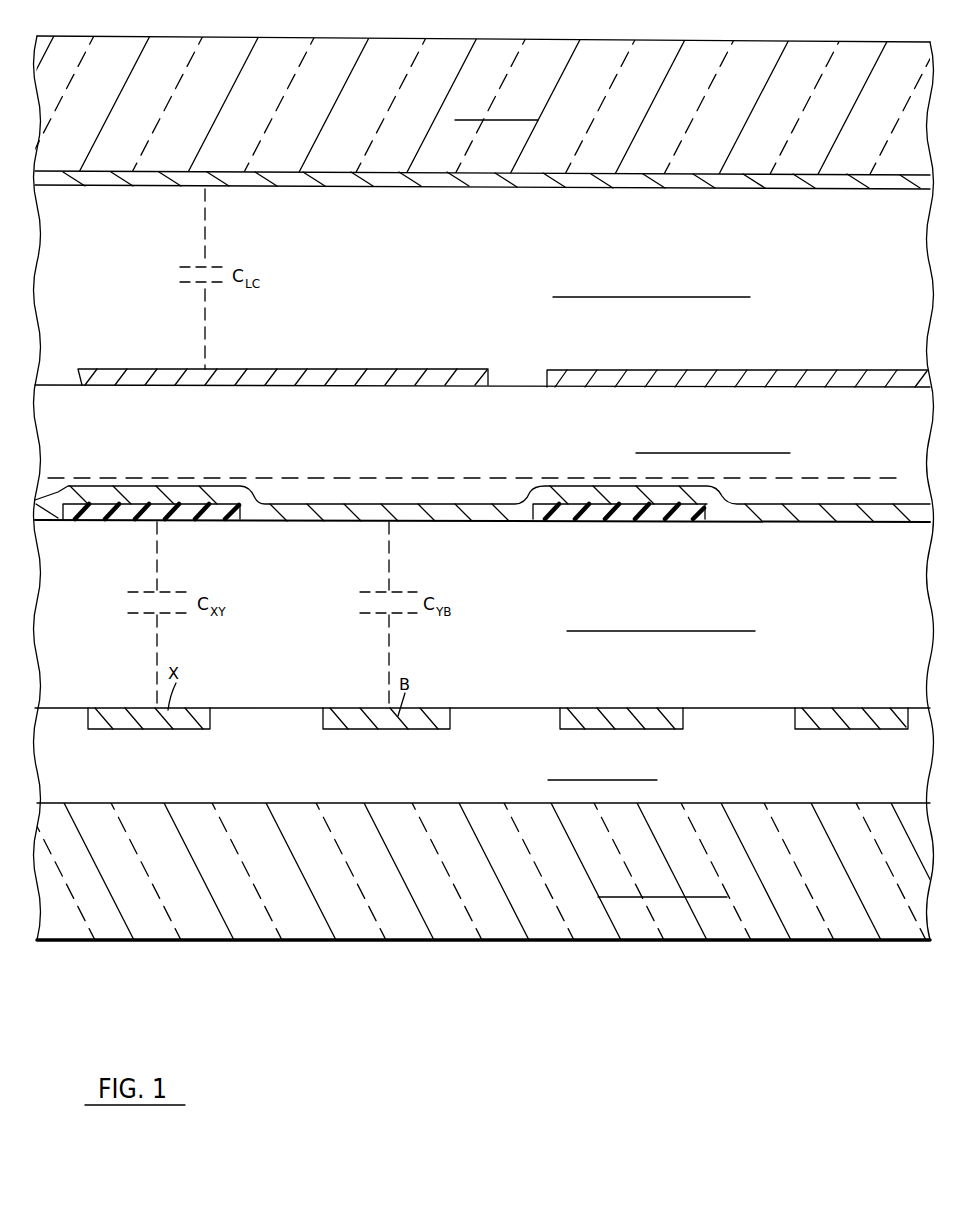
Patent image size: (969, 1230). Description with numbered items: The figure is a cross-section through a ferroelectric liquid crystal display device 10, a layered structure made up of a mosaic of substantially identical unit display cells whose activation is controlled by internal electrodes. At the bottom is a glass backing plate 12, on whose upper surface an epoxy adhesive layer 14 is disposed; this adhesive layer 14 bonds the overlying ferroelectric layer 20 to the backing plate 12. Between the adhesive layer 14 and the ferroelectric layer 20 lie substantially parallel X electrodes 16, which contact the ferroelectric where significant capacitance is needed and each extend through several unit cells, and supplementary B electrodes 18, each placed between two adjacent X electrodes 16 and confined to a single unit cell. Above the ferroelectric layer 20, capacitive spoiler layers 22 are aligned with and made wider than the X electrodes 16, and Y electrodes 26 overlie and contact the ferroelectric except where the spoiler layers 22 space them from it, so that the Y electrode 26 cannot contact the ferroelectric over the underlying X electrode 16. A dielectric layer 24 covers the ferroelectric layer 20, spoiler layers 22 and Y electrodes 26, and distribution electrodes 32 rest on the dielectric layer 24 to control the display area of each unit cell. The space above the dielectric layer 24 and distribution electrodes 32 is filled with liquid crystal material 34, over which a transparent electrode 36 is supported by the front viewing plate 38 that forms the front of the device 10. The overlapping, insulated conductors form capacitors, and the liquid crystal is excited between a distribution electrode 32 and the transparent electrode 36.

The ferroelectric liquid crystal display device 10 is at (346, 955).
The backing plate 12 is at (468, 888).
The adhesive layer 14 is at (348, 775).
The X electrodes 16 is at (180, 718).
The supplementary electrodes 18 is at (432, 713).
The ferroelectric layer 20 is at (825, 663).
The capacitive spoiler layers 22 is at (193, 508).
The dielectric layer 24 is at (350, 432).
The Y electrodes 26 is at (425, 515).
The distribution electrodes 32 is at (310, 375).
The liquid crystal material 34 is at (813, 297).
The transparent electrode 36 is at (505, 182).
The viewing plate 38 is at (603, 92).